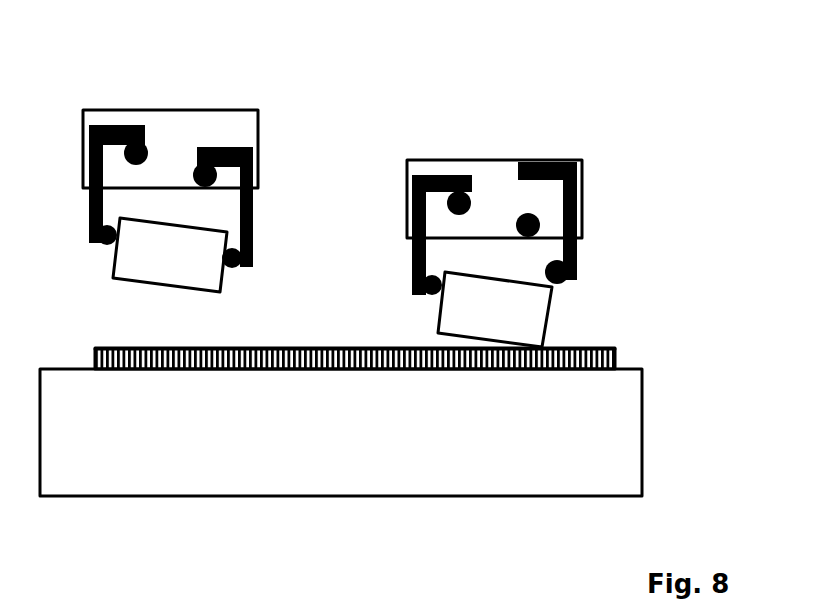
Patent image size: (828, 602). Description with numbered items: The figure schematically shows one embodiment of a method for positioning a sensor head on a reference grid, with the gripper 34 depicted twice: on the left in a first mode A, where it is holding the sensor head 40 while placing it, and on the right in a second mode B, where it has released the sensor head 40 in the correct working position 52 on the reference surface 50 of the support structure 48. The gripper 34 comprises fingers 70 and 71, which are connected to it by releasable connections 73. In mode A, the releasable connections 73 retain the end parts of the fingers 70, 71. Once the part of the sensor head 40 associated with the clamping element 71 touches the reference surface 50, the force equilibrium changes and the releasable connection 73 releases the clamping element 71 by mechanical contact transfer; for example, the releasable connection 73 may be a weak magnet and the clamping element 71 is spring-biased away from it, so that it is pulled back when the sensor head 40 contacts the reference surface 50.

The gripper 34 is at (182, 122).
The sensor head 40 is at (113, 268).
The support structure 48 is at (472, 482).
The reference surface 50 is at (600, 347).
The correct working position 52 is at (163, 350).
The finger 70 is at (88, 208).
The finger 71 is at (257, 208).
The releasable connection 73 is at (150, 147).